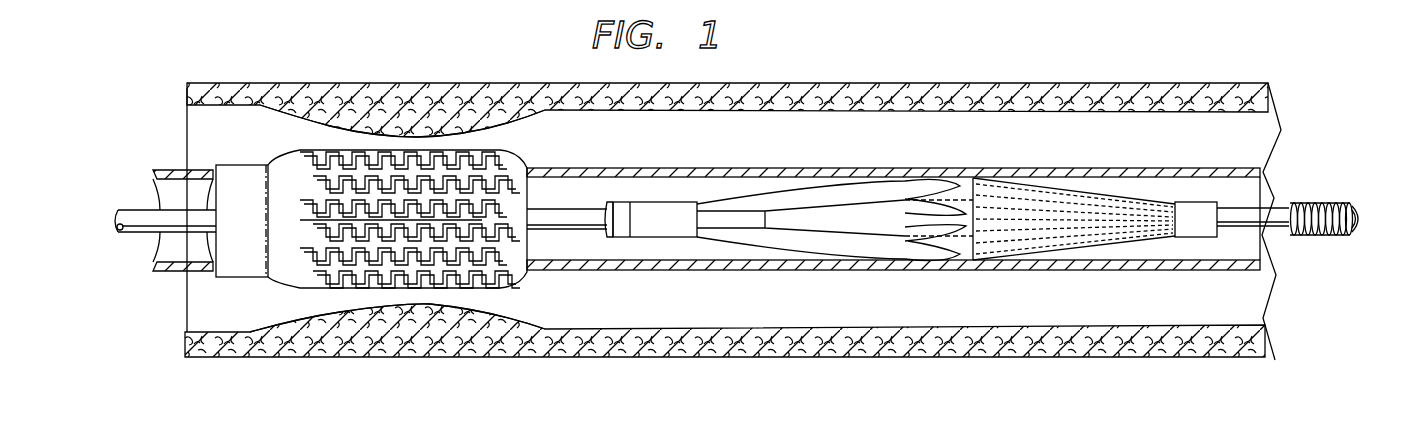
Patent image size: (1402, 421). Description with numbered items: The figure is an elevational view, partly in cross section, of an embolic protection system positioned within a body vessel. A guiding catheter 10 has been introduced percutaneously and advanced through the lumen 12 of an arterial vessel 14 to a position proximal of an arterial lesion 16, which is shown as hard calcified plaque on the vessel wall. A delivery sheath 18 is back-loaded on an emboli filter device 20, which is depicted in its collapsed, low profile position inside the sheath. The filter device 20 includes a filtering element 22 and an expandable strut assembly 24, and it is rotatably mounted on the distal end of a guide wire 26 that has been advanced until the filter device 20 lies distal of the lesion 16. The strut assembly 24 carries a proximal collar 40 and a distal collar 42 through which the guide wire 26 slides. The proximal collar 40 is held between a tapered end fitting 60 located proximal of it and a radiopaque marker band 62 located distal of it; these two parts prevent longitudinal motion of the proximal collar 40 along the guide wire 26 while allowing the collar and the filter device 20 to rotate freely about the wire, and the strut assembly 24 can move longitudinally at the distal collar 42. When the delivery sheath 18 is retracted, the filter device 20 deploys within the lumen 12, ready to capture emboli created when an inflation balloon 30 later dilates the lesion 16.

The guiding catheter 10 is at (245, 165).
The lumen 12 is at (232, 332).
The arterial vessel 14 is at (280, 83).
The arterial lesion 16 is at (318, 128).
The delivery sheath 18 is at (553, 168).
The emboli filter device 20 is at (905, 152).
The filtering element 22 is at (1127, 193).
The expandable strut assembly 24 is at (818, 186).
The guide wire 26 is at (1243, 215).
The inflation balloon 30 is at (512, 272).
The proximal collar 40 is at (662, 203).
The distal collar 42 is at (1195, 235).
The tapered end fitting 60 is at (608, 231).
The radiopaque marker band 62 is at (748, 212).